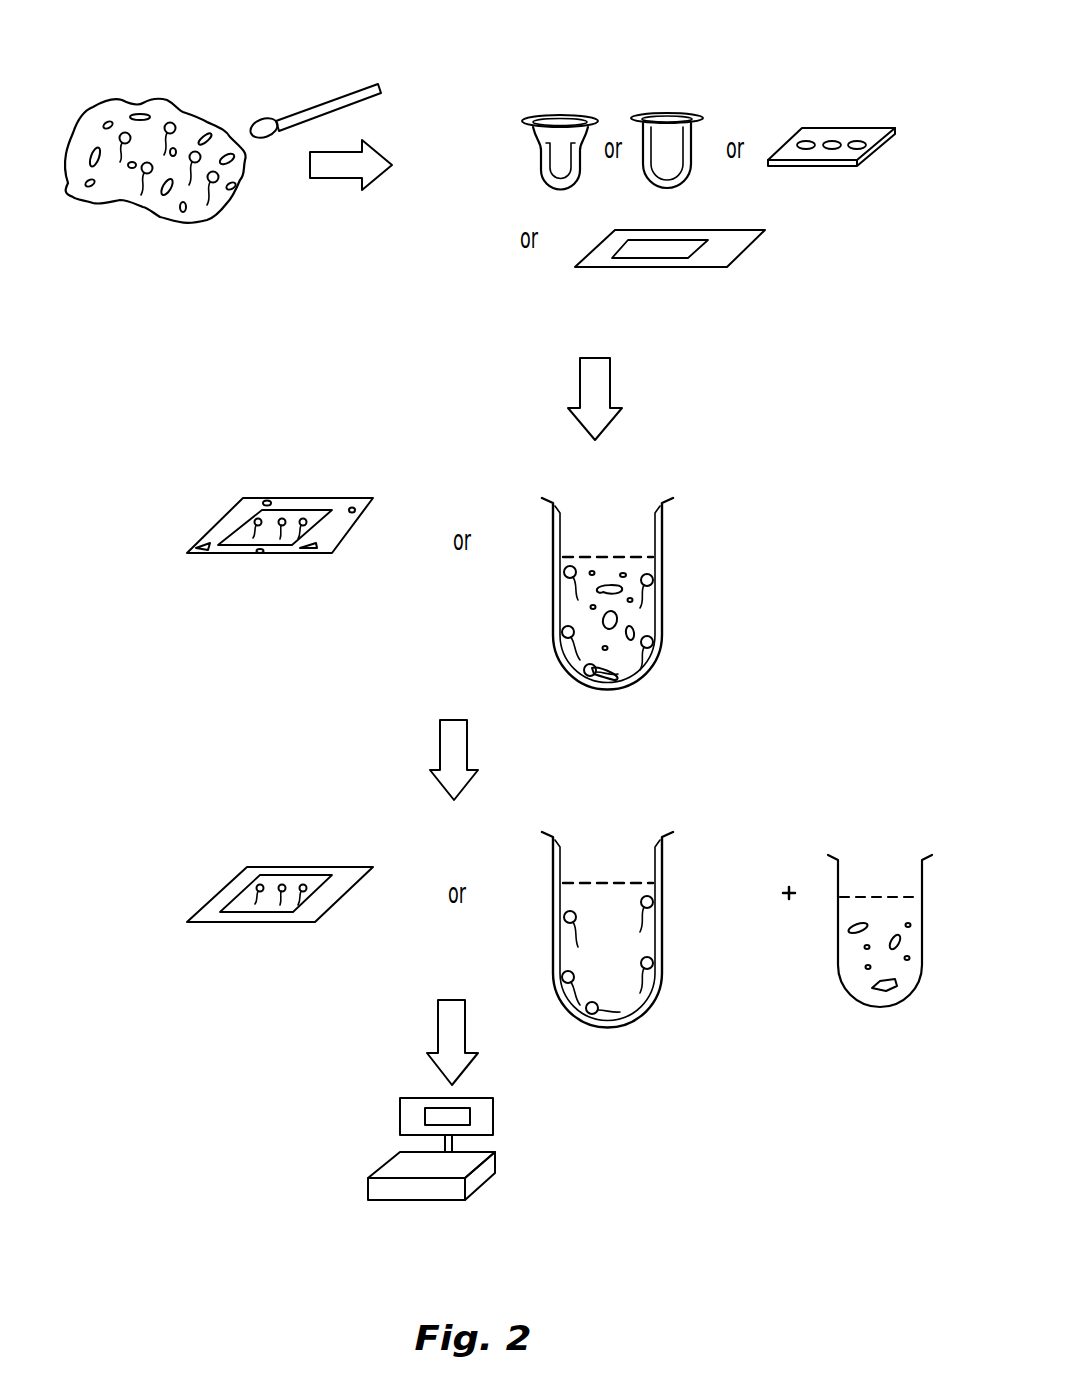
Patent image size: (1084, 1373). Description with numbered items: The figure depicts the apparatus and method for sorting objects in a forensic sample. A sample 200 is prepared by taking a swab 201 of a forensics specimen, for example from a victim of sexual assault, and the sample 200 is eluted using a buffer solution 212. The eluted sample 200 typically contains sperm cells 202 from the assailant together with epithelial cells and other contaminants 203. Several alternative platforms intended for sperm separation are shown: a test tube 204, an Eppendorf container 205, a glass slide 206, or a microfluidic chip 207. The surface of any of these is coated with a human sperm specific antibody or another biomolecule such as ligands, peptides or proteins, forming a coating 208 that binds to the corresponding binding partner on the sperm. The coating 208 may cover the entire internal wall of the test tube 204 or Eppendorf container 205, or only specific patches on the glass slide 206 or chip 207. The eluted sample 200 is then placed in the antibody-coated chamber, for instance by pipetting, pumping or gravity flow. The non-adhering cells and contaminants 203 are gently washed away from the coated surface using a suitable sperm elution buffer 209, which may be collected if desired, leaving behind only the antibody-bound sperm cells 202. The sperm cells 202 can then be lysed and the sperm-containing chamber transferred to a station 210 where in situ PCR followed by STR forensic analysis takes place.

The sample 200 is at (168, 226).
The swab 201 is at (324, 101).
The sperm cells 202 is at (178, 108).
The other contaminants 203 is at (233, 163).
The test tube 204 is at (694, 130).
The Eppendorf container 205 is at (530, 122).
The glass slide 206 is at (757, 243).
The microfluidic chip 207 is at (877, 143).
The sperm specific antibody coating 208 is at (806, 138).
The sperm elution buffer 209 is at (908, 982).
The station 210 is at (495, 1153).
The buffer solution 212 is at (627, 663).